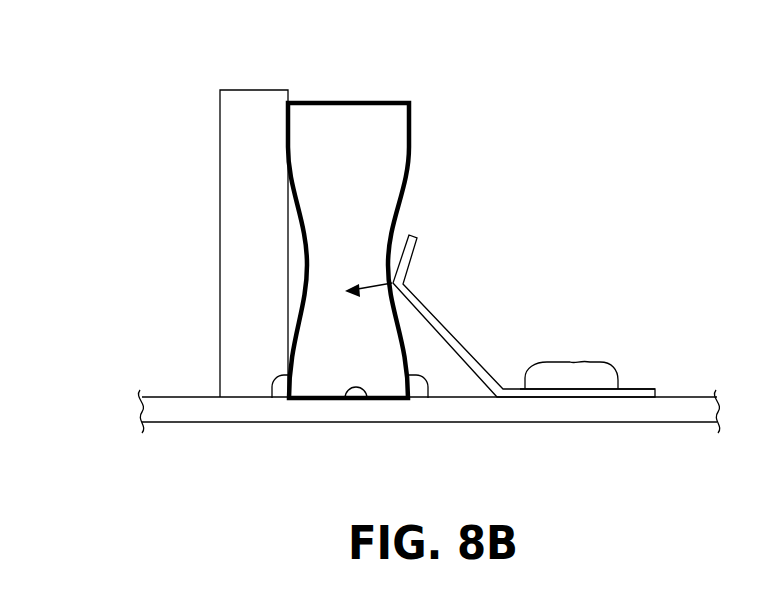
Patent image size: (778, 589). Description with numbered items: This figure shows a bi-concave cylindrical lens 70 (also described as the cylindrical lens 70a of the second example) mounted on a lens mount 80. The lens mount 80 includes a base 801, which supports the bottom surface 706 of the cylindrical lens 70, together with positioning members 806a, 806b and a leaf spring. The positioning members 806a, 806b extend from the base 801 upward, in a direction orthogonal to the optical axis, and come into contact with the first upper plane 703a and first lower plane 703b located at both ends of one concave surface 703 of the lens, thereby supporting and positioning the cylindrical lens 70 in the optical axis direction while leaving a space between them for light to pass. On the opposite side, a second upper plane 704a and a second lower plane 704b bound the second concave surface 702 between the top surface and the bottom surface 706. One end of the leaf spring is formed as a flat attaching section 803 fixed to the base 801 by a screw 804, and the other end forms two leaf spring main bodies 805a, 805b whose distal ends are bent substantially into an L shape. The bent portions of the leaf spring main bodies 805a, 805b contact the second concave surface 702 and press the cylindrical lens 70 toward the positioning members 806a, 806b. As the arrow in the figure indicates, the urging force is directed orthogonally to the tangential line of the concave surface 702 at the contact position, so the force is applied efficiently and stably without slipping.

The lens mount 80 is at (574, 427).
The base 801 is at (177, 414).
The attaching section 803 is at (640, 389).
The screw 804 is at (560, 362).
The leaf spring main body 805a is at (524, 316).
The leaf spring main body 805b is at (436, 318).
The positioning member 806a is at (164, 244).
The positioning member 806b is at (220, 128).
The cylindrical lens 70 is at (329, 248).
The cylindrical lens 70a is at (358, 101).
The second concave surface 702 is at (398, 203).
The concave surface 703 is at (304, 248).
The first upper plane 703a is at (287, 124).
The first lower plane 703b is at (271, 398).
The second upper plane 704a is at (409, 124).
The second lower plane 704b is at (428, 398).
The bottom surface 706 is at (365, 398).